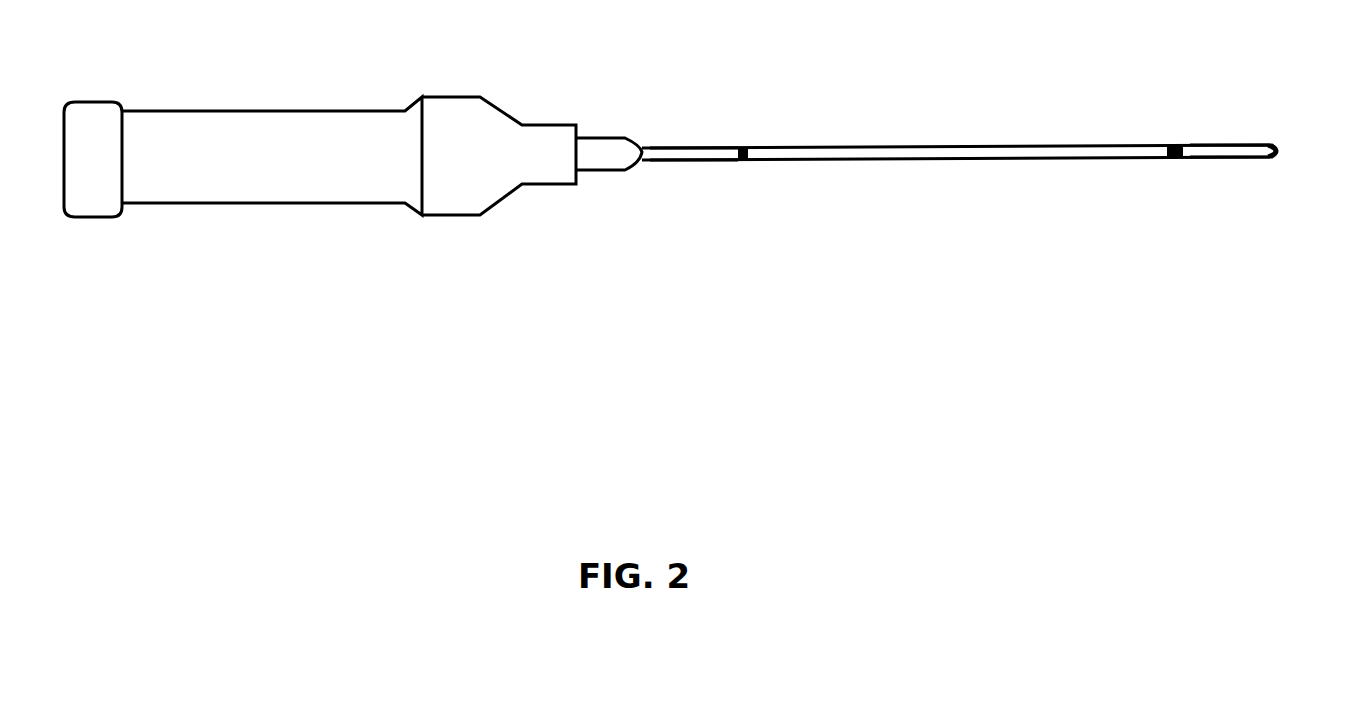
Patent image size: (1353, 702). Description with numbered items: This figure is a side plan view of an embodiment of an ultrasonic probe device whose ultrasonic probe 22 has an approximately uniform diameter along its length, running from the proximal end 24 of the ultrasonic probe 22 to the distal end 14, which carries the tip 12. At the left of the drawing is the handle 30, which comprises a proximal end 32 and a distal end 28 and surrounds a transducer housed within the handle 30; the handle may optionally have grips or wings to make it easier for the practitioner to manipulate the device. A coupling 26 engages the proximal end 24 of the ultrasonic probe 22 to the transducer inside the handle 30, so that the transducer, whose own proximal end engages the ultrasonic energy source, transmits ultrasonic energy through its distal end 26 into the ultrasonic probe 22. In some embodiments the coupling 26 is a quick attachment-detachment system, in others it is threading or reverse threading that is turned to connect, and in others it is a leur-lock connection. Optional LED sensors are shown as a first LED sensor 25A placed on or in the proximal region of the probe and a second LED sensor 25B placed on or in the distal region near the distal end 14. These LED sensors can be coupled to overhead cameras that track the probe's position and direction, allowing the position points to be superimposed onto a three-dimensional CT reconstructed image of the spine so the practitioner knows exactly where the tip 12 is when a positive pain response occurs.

The tip 12 is at (1282, 151).
The distal end 14 is at (1247, 160).
The ultrasonic probe 22 is at (860, 146).
The proximal end 24 is at (710, 163).
The LED sensor 25A is at (742, 146).
The LED sensor 25B is at (1174, 145).
The coupling 26 is at (600, 137).
The distal end 28 is at (540, 122).
The handle 30 is at (278, 108).
The proximal end 32 is at (98, 100).